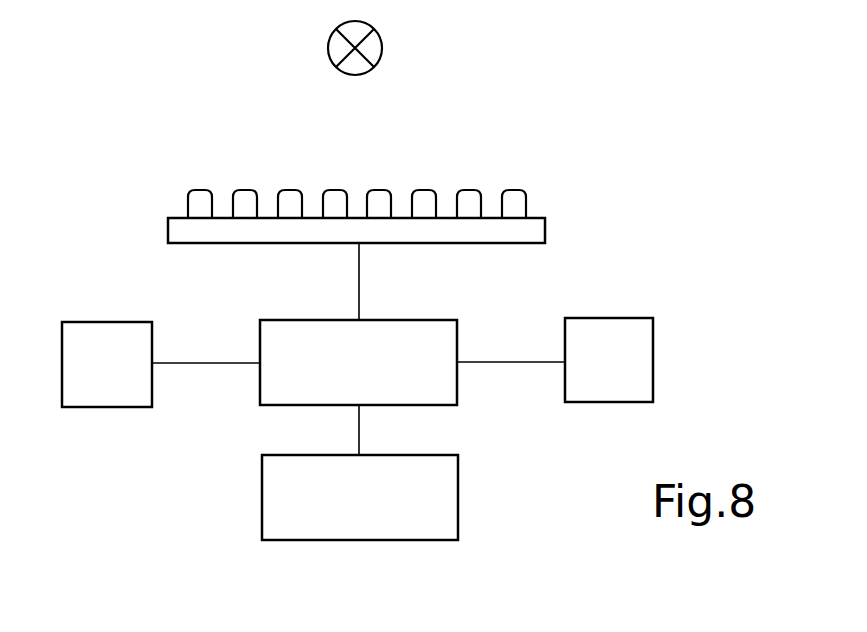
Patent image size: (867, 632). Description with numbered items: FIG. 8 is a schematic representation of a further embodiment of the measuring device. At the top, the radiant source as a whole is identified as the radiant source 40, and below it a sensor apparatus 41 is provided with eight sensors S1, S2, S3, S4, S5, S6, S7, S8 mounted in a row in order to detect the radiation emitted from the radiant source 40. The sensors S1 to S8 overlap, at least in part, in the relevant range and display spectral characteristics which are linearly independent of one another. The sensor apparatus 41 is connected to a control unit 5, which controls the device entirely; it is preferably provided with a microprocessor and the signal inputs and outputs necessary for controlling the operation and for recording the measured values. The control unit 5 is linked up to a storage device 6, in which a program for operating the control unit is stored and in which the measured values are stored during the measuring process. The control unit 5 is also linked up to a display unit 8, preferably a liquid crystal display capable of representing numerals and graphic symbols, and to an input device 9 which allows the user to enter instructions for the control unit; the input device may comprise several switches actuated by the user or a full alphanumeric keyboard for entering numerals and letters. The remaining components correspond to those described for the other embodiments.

The radiant source 40 is at (375, 42).
The sensor apparatus 41 is at (170, 230).
The sensor S1 is at (200, 188).
The sensor S2 is at (245, 188).
The sensor S3 is at (290, 188).
The sensor S4 is at (335, 188).
The sensor S5 is at (379, 188).
The sensor S6 is at (424, 188).
The sensor S7 is at (469, 188).
The sensor S8 is at (514, 188).
The control unit 5 is at (450, 378).
The storage device 6 is at (650, 372).
The display unit 8 is at (272, 497).
The input device 9 is at (113, 400).